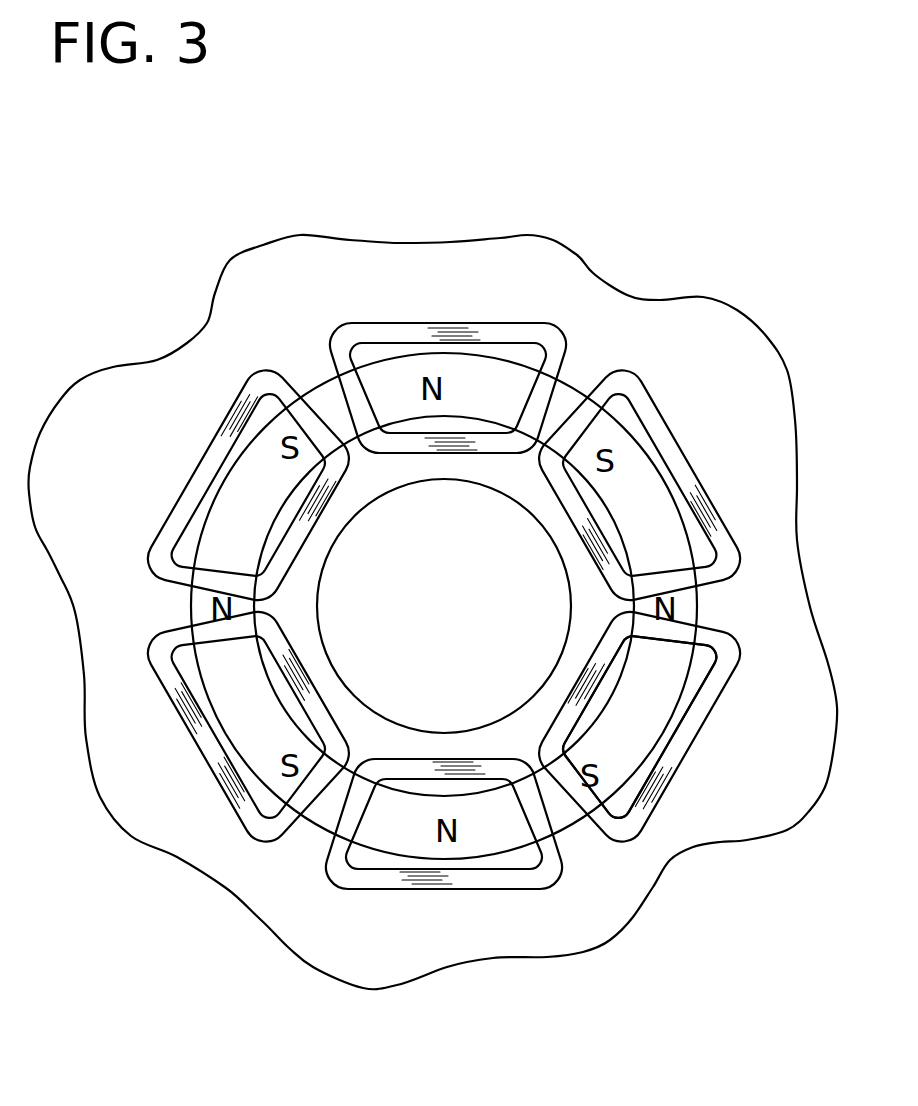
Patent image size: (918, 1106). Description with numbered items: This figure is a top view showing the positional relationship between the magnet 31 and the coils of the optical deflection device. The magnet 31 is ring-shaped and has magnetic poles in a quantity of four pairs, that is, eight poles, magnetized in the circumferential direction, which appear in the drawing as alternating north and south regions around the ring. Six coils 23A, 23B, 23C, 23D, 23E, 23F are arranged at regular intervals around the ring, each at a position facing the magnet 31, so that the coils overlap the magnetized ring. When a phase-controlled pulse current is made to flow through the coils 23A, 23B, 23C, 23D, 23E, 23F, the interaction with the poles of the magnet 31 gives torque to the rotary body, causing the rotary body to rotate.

The coil 23A is at (660, 430).
The coil 23B is at (690, 728).
The coil 23C is at (395, 880).
The coil 23D is at (208, 745).
The coil 23E is at (227, 440).
The coil 23F is at (423, 333).
The magnet 31 is at (672, 673).